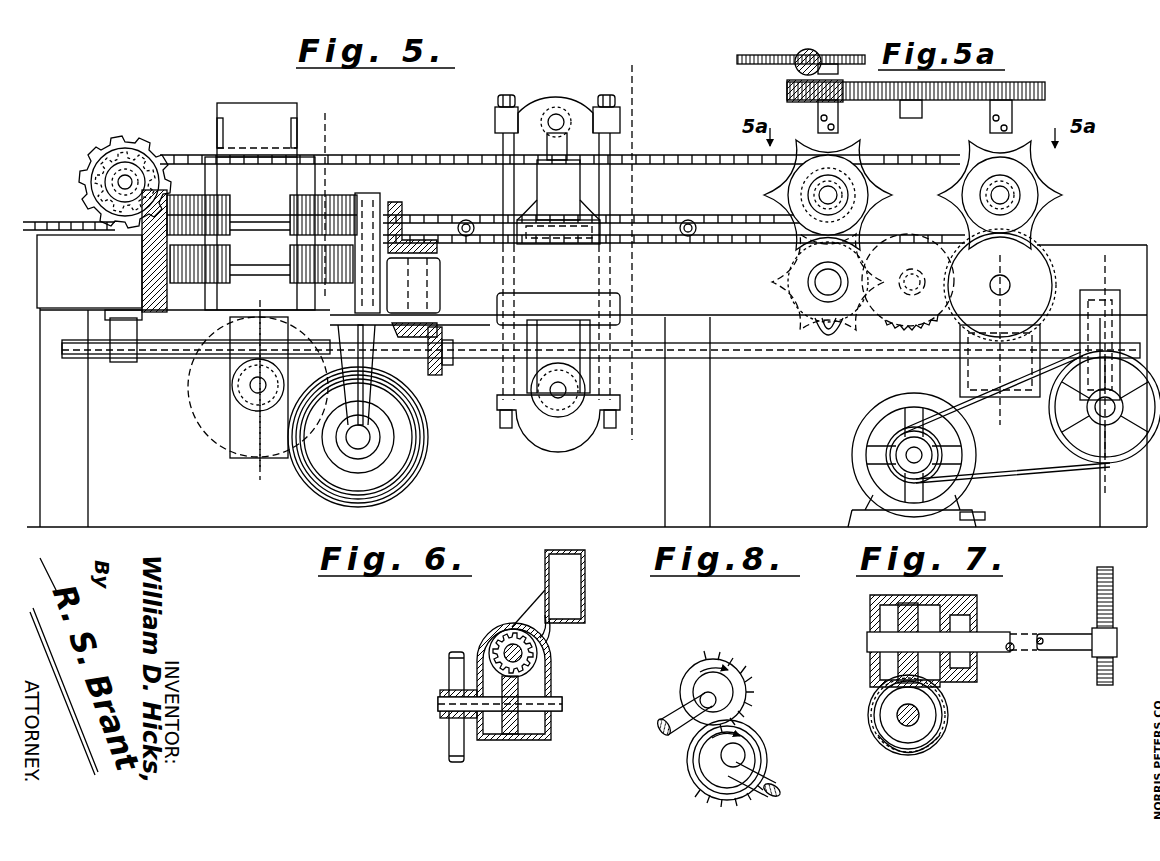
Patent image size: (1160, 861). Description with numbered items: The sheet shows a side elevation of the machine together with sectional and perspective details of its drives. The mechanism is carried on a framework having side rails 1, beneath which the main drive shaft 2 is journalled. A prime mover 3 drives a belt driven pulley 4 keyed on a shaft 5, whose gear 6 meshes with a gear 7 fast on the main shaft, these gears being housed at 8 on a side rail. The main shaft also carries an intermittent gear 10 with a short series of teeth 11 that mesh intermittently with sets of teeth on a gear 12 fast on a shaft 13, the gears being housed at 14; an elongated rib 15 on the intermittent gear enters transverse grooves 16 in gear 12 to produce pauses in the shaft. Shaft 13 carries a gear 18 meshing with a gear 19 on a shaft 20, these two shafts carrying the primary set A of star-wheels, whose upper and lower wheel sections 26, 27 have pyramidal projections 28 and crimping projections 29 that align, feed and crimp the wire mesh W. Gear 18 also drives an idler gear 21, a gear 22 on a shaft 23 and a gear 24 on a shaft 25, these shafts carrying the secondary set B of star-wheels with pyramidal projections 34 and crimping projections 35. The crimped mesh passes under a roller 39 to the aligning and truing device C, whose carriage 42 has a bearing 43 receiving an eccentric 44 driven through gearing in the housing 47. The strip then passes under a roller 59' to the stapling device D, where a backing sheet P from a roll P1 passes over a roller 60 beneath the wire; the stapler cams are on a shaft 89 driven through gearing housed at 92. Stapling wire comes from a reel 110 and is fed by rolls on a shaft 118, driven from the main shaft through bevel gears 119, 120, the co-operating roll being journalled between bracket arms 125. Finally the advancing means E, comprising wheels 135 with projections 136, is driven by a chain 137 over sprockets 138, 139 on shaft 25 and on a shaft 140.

In FIG. 5, the side rails 1 is at (1075, 275).
In FIG. 6, the side rails 1 is at (585, 598).
In FIG. 5, the main drive shaft 2 is at (745, 350).
In FIG. 6, the main drive shaft 2 is at (503, 650).
In FIG. 8, the main drive shaft 2 is at (765, 778).
In FIG. 7, the main drive shaft 2 is at (919, 716).
In FIG. 5, the prime mover 3 is at (858, 437).
In FIG. 5, the belt driven pulley 4 is at (1063, 443).
In FIG. 6, the belt driven pulley 4 is at (449, 667).
In FIG. 5, the shaft 5 is at (1095, 402).
In FIG. 6, the shaft 5 is at (438, 702).
In FIG. 5, the gear 6 is at (1088, 272).
In FIG. 6, the gear 6 is at (505, 740).
In FIG. 5, the gear 7 is at (986, 256).
In FIG. 6, the gear 7 is at (497, 634).
In FIG. 5, the housing 8 is at (1115, 325).
In FIG. 6, the housing 8 is at (508, 630).
In FIG. 8, the intermittent gear 10 is at (710, 763).
In FIG. 7, the intermittent gear 10 is at (932, 722).
In FIG. 8, the teeth 11 is at (705, 790).
In FIG. 7, the teeth 11 is at (870, 718).
In FIG. 8, the gear 12 is at (745, 702).
In FIG. 7, the gear 12 is at (892, 680).
In FIG. 5, the shaft 13 is at (1003, 290).
In FIG. 5A, the shaft 13 is at (1012, 125).
In FIG. 8, the shaft 13 is at (672, 720).
In FIG. 7, the shaft 13 is at (1012, 636).
In FIG. 5, the housing 14 is at (617, 72).
In FIG. 7, the housing 14 is at (868, 606).
In FIG. 8, the elongated tooth or rib 15 is at (693, 745).
In FIG. 7, the elongated tooth or rib 15 is at (890, 748).
In FIG. 8, the transverse grooves 16 is at (730, 674).
In FIG. 7, the transverse grooves 16 is at (896, 618).
In FIG. 5, the gear 18 is at (345, 120).
In FIG. 7, the gear 18 is at (1097, 676).
In FIG. 5A, the gear 19 is at (1045, 90).
In FIG. 7, the gear 19 is at (1097, 586).
In FIG. 5, the shaft 20 is at (1002, 193).
In FIG. 5A, the shaft 20 is at (1012, 115).
In FIG. 5, the idler gear 21 is at (912, 326).
In FIG. 5A, the idler gear 21 is at (888, 102).
In FIG. 5A, the gear 22 is at (838, 108).
In FIG. 5, the shaft 23 is at (806, 283).
In FIG. 5A, the shaft 23 is at (838, 126).
In FIG. 5A, the gear 24 is at (787, 92).
In FIG. 5, the shaft 25 is at (832, 195).
In FIG. 5A, the shaft 25 is at (818, 113).
In FIG. 5, the upper wheel sections 26 is at (1028, 212).
In FIG. 5, the lower wheel sections 27 is at (1048, 295).
In FIG. 5, the pyramidal projections 28 is at (1050, 203).
In FIG. 5, the crimping projections 29 is at (972, 170).
In FIG. 5, the pyramidal projections 34 is at (870, 205).
In FIG. 5, the crimping projections 35 is at (862, 222).
In FIG. 5, the roller 39 is at (688, 220).
In FIG. 5, the carriage 42 is at (545, 105).
In FIG. 5, the bearing 43 is at (568, 420).
In FIG. 5, the eccentric 44 is at (552, 418).
In FIG. 5, the housing 47 is at (558, 320).
In FIG. 5, the roller 59' is at (471, 207).
In FIG. 5, the roller 60 is at (360, 309).
In FIG. 5, the shaft 89 is at (258, 385).
In FIG. 5, the housing 92 is at (238, 333).
In FIG. 5, the wire reel 110 is at (292, 278).
In FIG. 5, the shaft 118 is at (260, 222).
In FIG. 5, the beveled gears 119 is at (412, 220).
In FIG. 5, the beveled gears 120 is at (442, 335).
In FIG. 5, the bracket arms 125 is at (190, 194).
In FIG. 5, the wheels 135 is at (100, 150).
In FIG. 5, the projections 136 is at (172, 148).
In FIG. 5, the chain 137 is at (400, 155).
In FIG. 5A, the chain 137 is at (796, 50).
In FIG. 5, the sprocket 138 is at (785, 176).
In FIG. 5A, the sprocket 138 is at (809, 54).
In FIG. 5, the sprocket 139 is at (88, 160).
In FIG. 5, the shaft 140 is at (118, 183).
In FIG. 5, the primary set of star-wheels A is at (1070, 182).
In FIG. 5, the secondary set of star-wheels B is at (755, 212).
In FIG. 5, the aligning and truing device C is at (560, 92).
In FIG. 5, the stapling device D is at (274, 102).
In FIG. 5, the advancing means E is at (125, 128).
In FIG. 5, the backing sheet P is at (382, 316).
In FIG. 5, the roll P1 is at (425, 458).
In FIG. 5, the wire mesh W is at (1138, 245).